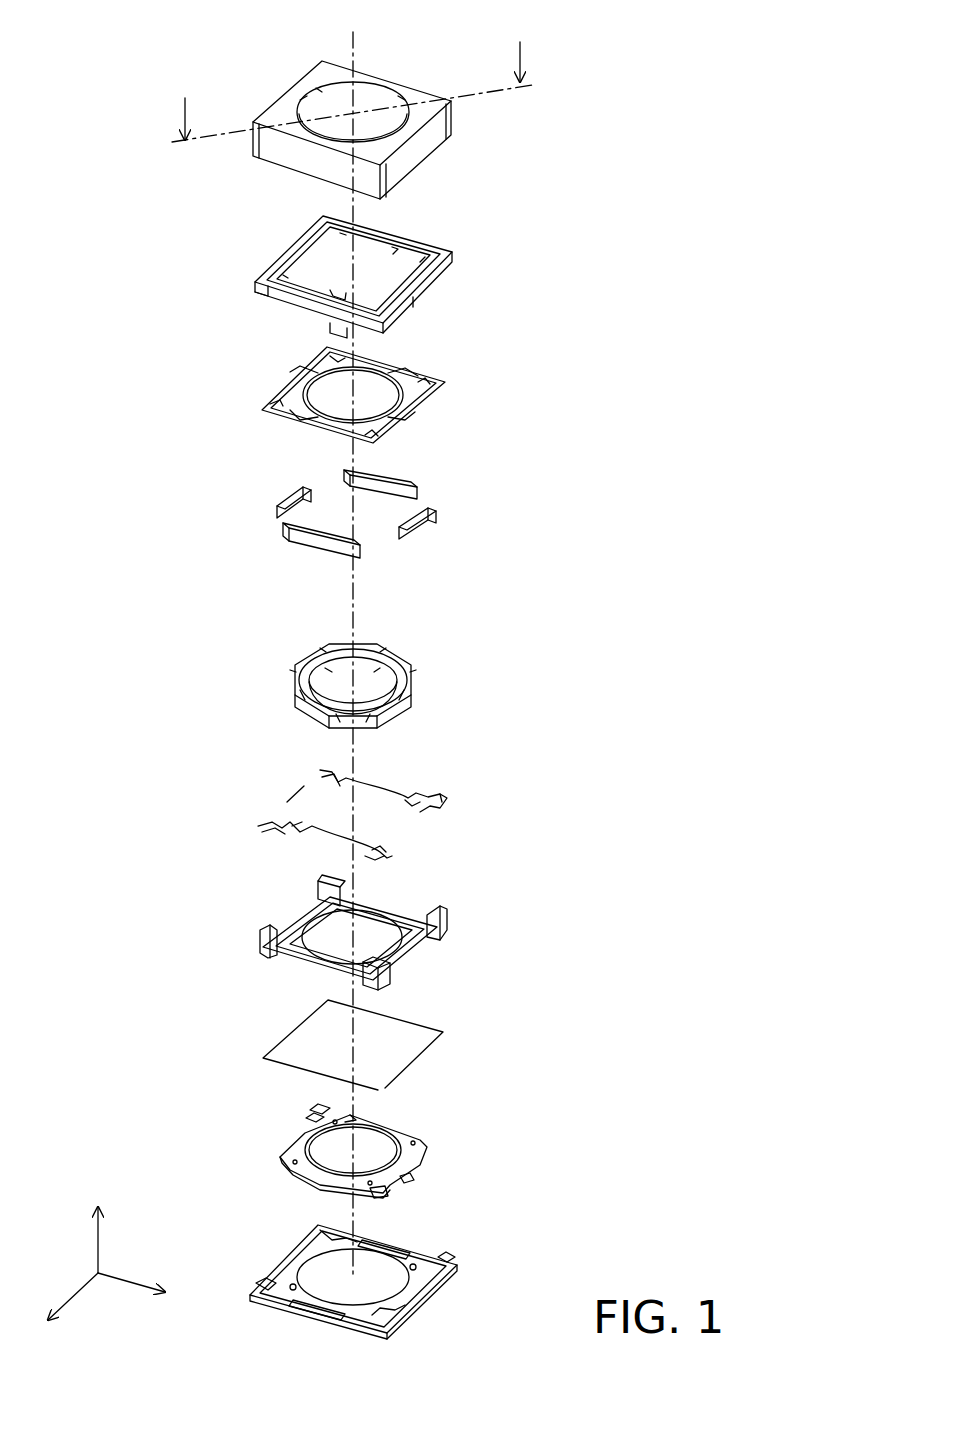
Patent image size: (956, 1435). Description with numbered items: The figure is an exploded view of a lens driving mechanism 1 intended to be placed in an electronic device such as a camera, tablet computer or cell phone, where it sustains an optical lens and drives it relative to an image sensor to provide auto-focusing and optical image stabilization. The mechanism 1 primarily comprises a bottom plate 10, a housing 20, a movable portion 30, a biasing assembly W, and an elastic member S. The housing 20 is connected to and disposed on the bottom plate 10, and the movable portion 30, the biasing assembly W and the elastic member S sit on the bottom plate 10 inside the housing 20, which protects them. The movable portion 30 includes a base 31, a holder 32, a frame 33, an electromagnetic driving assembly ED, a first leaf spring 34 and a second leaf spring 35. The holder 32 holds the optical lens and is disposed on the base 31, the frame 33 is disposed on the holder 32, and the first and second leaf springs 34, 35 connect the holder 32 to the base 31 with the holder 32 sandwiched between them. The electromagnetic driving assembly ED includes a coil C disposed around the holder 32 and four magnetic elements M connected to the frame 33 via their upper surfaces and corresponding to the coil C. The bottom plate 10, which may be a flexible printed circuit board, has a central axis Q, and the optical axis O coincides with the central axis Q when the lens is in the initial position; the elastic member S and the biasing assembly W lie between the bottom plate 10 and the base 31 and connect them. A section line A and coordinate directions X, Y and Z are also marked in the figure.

The lens driving mechanism 1 is at (105, 28).
The bottom plate 10 is at (430, 1291).
The housing 20 is at (426, 148).
The movable portion 30 is at (533, 232).
The base 31 is at (426, 946).
The holder 32 is at (374, 663).
The frame 33 is at (426, 282).
The first leaf spring 34 is at (426, 410).
The second leaf spring 35 is at (418, 826).
The magnetic elements M is at (432, 531).
The coil C is at (382, 716).
The electromagnetic driving assembly ED is at (149, 548).
The biasing assembly W is at (423, 1060).
The elastic member S is at (423, 1172).
The optical axis O is at (351, 639).
The central axis Q is at (366, 639).
The section line A- A is at (352, 74).
The X axis X is at (146, 1292).
The Y axis Y is at (57, 1308).
The Z axis Z is at (97, 1222).